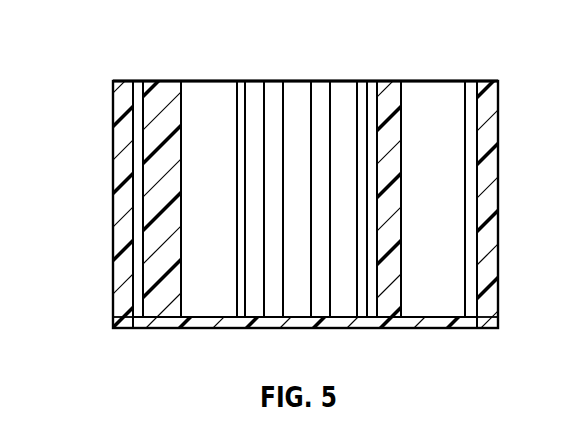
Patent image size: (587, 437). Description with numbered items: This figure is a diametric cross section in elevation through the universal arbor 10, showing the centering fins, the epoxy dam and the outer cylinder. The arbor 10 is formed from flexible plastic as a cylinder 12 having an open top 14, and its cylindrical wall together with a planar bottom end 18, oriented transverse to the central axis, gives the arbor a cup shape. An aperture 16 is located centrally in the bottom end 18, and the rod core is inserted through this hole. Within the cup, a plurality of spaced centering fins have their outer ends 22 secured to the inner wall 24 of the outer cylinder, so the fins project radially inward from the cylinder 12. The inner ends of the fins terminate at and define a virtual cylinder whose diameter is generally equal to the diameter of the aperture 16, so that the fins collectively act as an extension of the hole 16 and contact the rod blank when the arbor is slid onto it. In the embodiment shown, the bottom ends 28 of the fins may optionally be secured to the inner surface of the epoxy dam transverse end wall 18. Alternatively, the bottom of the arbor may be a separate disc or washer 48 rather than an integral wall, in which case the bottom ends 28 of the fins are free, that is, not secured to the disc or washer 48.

The universal arbor 10 is at (358, 42).
The cylinder 12 is at (113, 145).
The open top 14 is at (202, 76).
The aperture 16 is at (304, 328).
The bottom end 18 is at (297, 343).
The outer ends of the centering fins 22 is at (465, 97).
The inner wall of the cylinder 24 is at (486, 158).
The bottom ends of the fins 28 is at (443, 318).
The disc/washer 48 is at (193, 334).